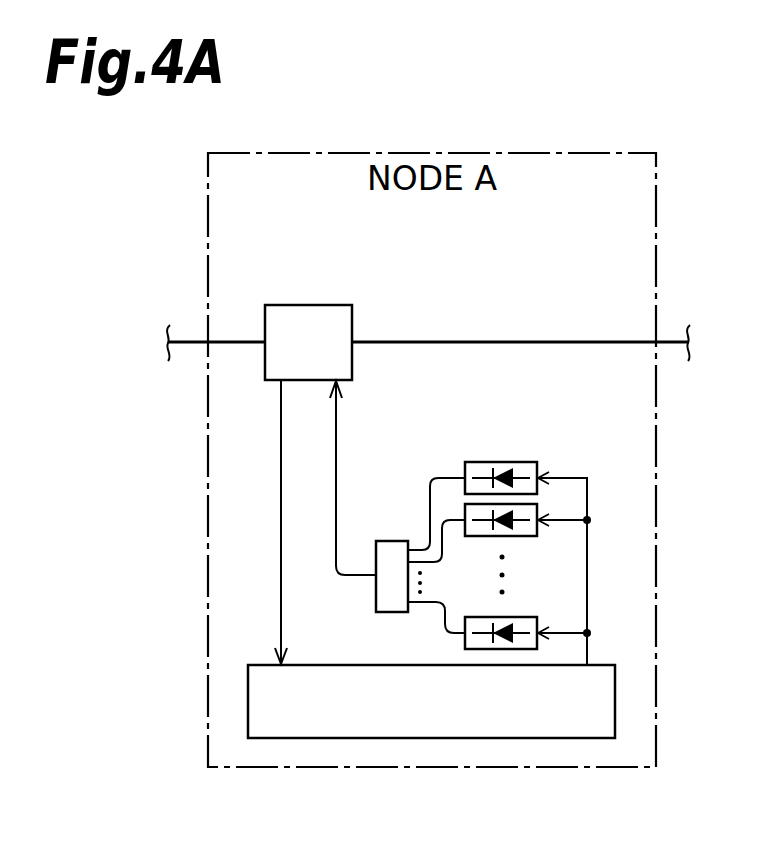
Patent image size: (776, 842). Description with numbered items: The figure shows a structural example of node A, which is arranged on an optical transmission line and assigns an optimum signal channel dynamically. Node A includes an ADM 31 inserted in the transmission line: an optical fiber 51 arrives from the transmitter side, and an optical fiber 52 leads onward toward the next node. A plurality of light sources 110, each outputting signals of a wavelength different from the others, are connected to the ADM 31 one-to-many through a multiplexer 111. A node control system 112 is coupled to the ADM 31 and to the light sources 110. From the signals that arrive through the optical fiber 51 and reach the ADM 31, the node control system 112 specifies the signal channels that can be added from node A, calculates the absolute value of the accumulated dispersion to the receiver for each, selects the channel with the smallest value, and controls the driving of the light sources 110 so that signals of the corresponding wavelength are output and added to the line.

The ADM 31 is at (303, 305).
The optical fiber 51 is at (188, 342).
The optical fiber 52 is at (670, 342).
The node A is at (356, 347).
The light sources 110 is at (537, 490).
The multiplexer 111 is at (383, 540).
The node control system 112 is at (430, 740).